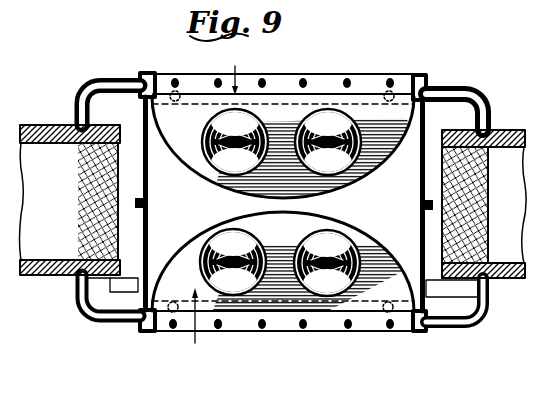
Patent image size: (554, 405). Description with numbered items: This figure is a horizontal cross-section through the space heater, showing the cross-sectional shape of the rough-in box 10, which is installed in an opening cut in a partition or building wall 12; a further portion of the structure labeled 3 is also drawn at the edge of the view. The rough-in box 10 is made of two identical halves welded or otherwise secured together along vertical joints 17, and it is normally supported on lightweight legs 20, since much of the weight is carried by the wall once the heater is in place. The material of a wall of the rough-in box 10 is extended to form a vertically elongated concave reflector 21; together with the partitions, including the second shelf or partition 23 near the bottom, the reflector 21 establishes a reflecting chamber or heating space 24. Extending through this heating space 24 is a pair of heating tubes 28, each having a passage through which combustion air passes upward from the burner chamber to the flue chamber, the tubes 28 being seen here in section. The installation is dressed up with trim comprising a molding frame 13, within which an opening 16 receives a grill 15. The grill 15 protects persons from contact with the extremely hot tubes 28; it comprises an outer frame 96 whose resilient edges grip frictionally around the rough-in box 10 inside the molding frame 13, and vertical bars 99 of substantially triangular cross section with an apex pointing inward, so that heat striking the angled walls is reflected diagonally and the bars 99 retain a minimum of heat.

The frame 3 is at (538, 205).
The rough-in box 10 is at (428, 129).
The building wall 12 is at (40, 125).
The molding frame 13 is at (100, 78).
The grill 15 is at (167, 74).
The opening 16 is at (432, 86).
The vertical joints 17 is at (138, 201).
The legs 20 is at (110, 280).
The concave reflector 21 is at (193, 171).
The second shelf or partition 23 is at (274, 98).
The reflecting chamber 24 is at (216, 206).
The heating tubes 28 is at (258, 126).
The outer frame 96 is at (141, 104).
The vertical bars 99 is at (224, 329).